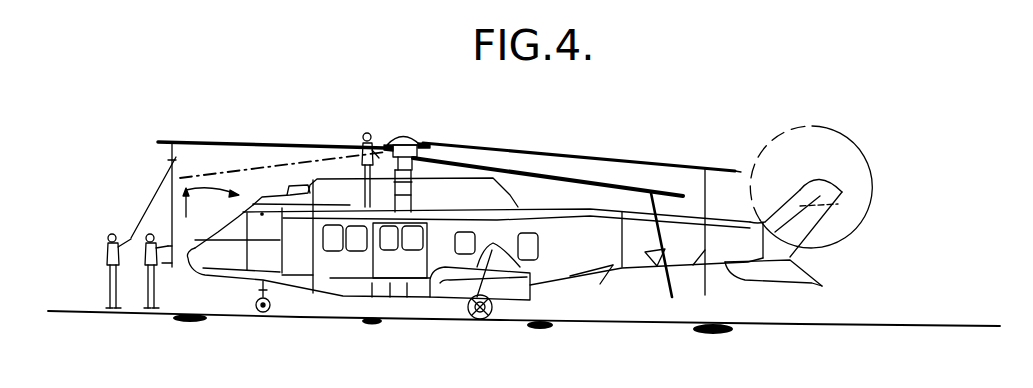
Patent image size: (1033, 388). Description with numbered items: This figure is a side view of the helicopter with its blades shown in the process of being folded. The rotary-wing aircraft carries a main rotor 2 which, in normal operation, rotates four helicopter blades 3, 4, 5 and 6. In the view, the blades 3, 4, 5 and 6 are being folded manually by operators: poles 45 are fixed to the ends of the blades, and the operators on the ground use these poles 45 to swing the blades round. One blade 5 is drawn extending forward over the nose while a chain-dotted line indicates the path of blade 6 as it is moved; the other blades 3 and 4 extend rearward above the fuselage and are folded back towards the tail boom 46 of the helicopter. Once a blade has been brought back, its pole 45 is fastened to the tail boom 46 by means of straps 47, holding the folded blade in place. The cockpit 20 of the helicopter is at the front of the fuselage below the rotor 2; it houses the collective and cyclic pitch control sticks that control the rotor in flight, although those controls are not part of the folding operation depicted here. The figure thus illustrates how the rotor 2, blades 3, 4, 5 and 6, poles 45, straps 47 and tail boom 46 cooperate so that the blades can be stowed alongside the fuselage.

The main rotor 2 is at (415, 142).
The helicopter blade 3 is at (578, 157).
The helicopter blade 4 is at (637, 189).
The helicopter blade 5 is at (234, 141).
The helicopter blade 6 is at (209, 172).
The cockpit 20 is at (220, 253).
The pole 45 is at (170, 207).
The tail boom 46 is at (580, 245).
The strap 47 is at (645, 252).